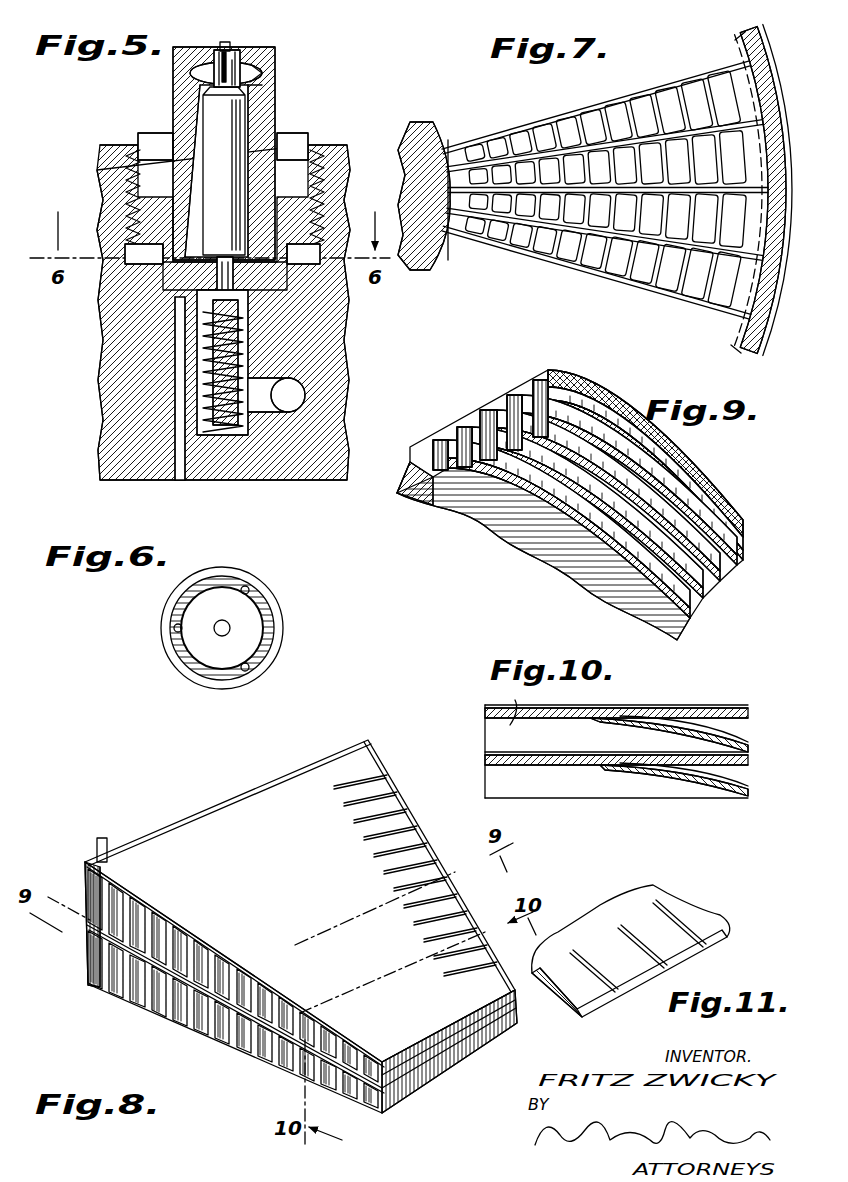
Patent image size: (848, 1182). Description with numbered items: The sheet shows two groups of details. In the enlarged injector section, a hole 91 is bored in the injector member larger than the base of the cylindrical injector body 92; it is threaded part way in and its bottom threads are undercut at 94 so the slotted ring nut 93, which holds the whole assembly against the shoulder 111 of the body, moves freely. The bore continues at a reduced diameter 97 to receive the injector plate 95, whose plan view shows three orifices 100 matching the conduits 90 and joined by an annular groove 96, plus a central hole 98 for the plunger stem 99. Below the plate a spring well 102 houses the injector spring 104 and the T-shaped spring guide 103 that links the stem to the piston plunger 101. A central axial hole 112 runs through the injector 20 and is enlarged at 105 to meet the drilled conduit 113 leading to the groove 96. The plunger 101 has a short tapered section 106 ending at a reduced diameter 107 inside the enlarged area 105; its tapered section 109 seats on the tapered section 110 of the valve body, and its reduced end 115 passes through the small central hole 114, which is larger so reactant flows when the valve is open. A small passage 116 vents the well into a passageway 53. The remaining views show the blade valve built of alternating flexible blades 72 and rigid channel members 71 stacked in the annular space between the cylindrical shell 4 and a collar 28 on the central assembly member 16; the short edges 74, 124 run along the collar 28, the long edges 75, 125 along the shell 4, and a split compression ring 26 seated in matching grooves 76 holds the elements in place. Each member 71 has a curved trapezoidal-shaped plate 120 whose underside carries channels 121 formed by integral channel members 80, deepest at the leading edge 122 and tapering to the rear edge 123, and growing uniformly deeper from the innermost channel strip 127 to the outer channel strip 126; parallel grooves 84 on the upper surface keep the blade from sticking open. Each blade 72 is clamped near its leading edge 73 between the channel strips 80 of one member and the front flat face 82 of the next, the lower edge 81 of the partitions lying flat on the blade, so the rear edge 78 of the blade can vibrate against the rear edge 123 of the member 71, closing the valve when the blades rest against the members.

In FIG. 7, the cylindrical shell 4 is at (768, 52).
In FIG. 7, the central assembly member 16 is at (425, 130).
In FIG. 5, the injector 20 is at (170, 78).
In FIG. 7, the split compression ring 26 is at (742, 38).
In FIG. 8, the split compression ring 26 is at (108, 840).
In FIG. 7, the collar 28 is at (445, 125).
In FIG. 5, the passageway 53 is at (292, 395).
In FIG. 7, the rigid channel member 71 is at (568, 135).
In FIG. 9, the rigid channel member 71 is at (462, 418).
In FIG. 10, the rigid channel member 71 is at (486, 768).
In FIG. 8, the rigid channel member 71 is at (440, 1060).
In FIG. 7, the flexible blade 72 is at (662, 130).
In FIG. 9, the flexible blade 72 is at (560, 562).
In FIG. 10, the flexible blade 72 is at (672, 705).
In FIG. 8, the flexible blade 72 is at (350, 752).
In FIG. 10, the leading edge 73 is at (485, 750).
In FIG. 8, the leading edge 73 is at (320, 935).
In FIG. 8, the short edge 74 is at (445, 1028).
In FIG. 8, the long edge 75 is at (170, 826).
In FIG. 8, the matching grooves 76 is at (96, 840).
In FIG. 10, the rear edge 78 is at (745, 705).
In FIG. 8, the rear edge 78 is at (440, 857).
In FIG. 7, the channel members 80 is at (620, 118).
In FIG. 9, the channel members 80 is at (545, 385).
In FIG. 8, the channel members 80 is at (175, 1005).
In FIG. 9, the lower edge 81 is at (582, 418).
In FIG. 10, the lower edge 81 is at (493, 798).
In FIG. 8, the lower edge 81 is at (212, 1040).
In FIG. 10, the front flat face 82 is at (505, 704).
In FIG. 8, the front flat face 82 is at (128, 870).
In FIG. 9, the parallel grooves 84 is at (730, 505).
In FIG. 10, the parallel grooves 84 is at (720, 730).
In FIG. 11, the parallel grooves 84 is at (680, 920).
In FIG. 8, the parallel grooves 84 is at (393, 790).
In FIG. 5, the conduits 90 is at (182, 478).
In FIG. 5, the hole 91 is at (134, 177).
In FIG. 5, the injector body 92 is at (136, 215).
In FIG. 5, the slotted ring nut 93 is at (158, 148).
In FIG. 5, the undercut 94 is at (140, 266).
In FIG. 5, the injector plate 95 is at (293, 274).
In FIG. 6, the injector plate 95 is at (172, 672).
In FIG. 5, the annular groove 96 is at (300, 265).
In FIG. 6, the annular groove 96 is at (210, 668).
In FIG. 5, the reduced diameter bore 97 is at (213, 300).
In FIG. 6, the central hole 98 is at (219, 631).
In FIG. 5, the plunger stem 99 is at (262, 298).
In FIG. 5, the orifices 100 is at (220, 312).
In FIG. 6, the orifices 100 is at (249, 592).
In FIG. 5, the piston plunger 101 is at (233, 113).
In FIG. 5, the spring well 102 is at (248, 420).
In FIG. 5, the T-shaped spring guide 103 is at (228, 340).
In FIG. 5, the injector spring 104 is at (226, 435).
In FIG. 5, the enlarged area 105 is at (251, 70).
In FIG. 5, the short tapered section 106 is at (248, 90).
In FIG. 5, the reduced diameter 107 is at (205, 70).
In FIG. 5, the tapered section 109 is at (233, 62).
In FIG. 5, the tapered section 110 is at (214, 52).
In FIG. 5, the shoulder 111 is at (318, 195).
In FIG. 5, the central axial hole 112 is at (245, 152).
In FIG. 5, the drilled conduit 113 is at (193, 108).
In FIG. 5, the small central hole 114 is at (223, 50).
In FIG. 5, the reduced end 115 is at (229, 42).
In FIG. 5, the small passage 116 is at (262, 380).
In FIG. 7, the trapezoidal-shaped plate 120 is at (722, 72).
In FIG. 9, the trapezoidal-shaped plate 120 is at (683, 460).
In FIG. 10, the trapezoidal-shaped plate 120 is at (600, 720).
In FIG. 11, the trapezoidal-shaped plate 120 is at (636, 895).
In FIG. 8, the trapezoidal-shaped plate 120 is at (280, 785).
In FIG. 7, the channels 121 is at (683, 290).
In FIG. 9, the channels 121 is at (510, 400).
In FIG. 8, the channels 121 is at (112, 990).
In FIG. 7, the leading edge 122 is at (533, 118).
In FIG. 9, the leading edge 122 is at (490, 412).
In FIG. 8, the leading edge 122 is at (222, 940).
In FIG. 9, the rear edge 123 is at (740, 552).
In FIG. 10, the rear edge 123 is at (745, 795).
In FIG. 8, the rear edge 123 is at (418, 830).
In FIG. 8, the inner edge 124 is at (416, 1040).
In FIG. 8, the outer edge 125 is at (218, 800).
In FIG. 7, the outer channel strip 126 is at (764, 85).
In FIG. 8, the outer channel strip 126 is at (90, 972).
In FIG. 7, the innermost channel strip 127 is at (465, 140).
In FIG. 8, the innermost channel strip 127 is at (383, 1115).